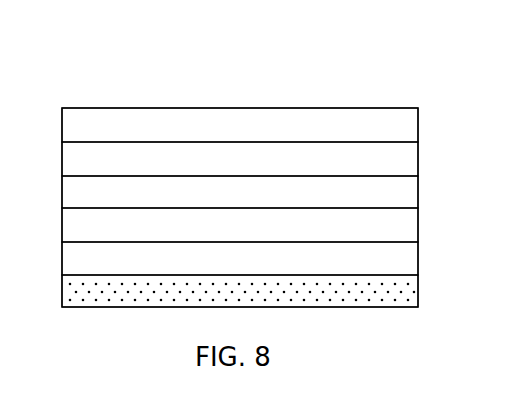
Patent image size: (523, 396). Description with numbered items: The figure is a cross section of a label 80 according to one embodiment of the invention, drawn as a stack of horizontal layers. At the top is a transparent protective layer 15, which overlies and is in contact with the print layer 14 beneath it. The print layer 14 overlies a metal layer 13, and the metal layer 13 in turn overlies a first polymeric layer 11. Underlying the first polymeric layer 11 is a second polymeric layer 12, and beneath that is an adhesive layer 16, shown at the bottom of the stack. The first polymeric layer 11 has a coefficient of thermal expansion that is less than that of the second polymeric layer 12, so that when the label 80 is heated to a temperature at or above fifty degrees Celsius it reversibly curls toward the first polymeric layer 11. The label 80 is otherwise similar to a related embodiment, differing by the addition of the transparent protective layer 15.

The label 80 is at (130, 71).
The transparent protective layer 15 is at (396, 122).
The print layer 14 is at (396, 165).
The metal layer 13 is at (396, 197).
The first polymeric layer 11 is at (405, 218).
The second polymeric layer 12 is at (405, 252).
The adhesive layer 16 is at (407, 295).